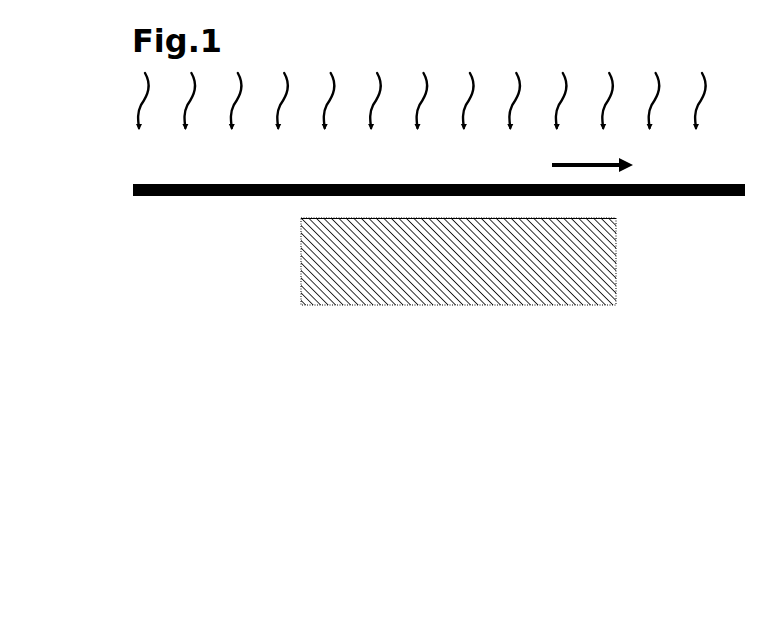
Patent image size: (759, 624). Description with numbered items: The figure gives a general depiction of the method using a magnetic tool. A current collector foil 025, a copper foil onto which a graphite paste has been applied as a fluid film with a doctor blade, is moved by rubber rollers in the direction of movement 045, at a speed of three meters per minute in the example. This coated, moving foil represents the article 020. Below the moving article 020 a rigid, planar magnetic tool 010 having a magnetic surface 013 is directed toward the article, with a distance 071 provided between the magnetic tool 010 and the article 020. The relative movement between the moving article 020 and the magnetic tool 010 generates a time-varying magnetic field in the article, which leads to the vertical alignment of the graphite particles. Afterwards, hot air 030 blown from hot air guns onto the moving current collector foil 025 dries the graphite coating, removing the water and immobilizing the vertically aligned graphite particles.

The magnetic tool 010 is at (458, 261).
The magnetic surface 013 is at (578, 222).
The article 020 is at (735, 183).
The current collector foil 025 is at (151, 176).
The hot air 030 is at (421, 86).
The direction of movement 045 is at (562, 162).
The distance 071 is at (308, 205).